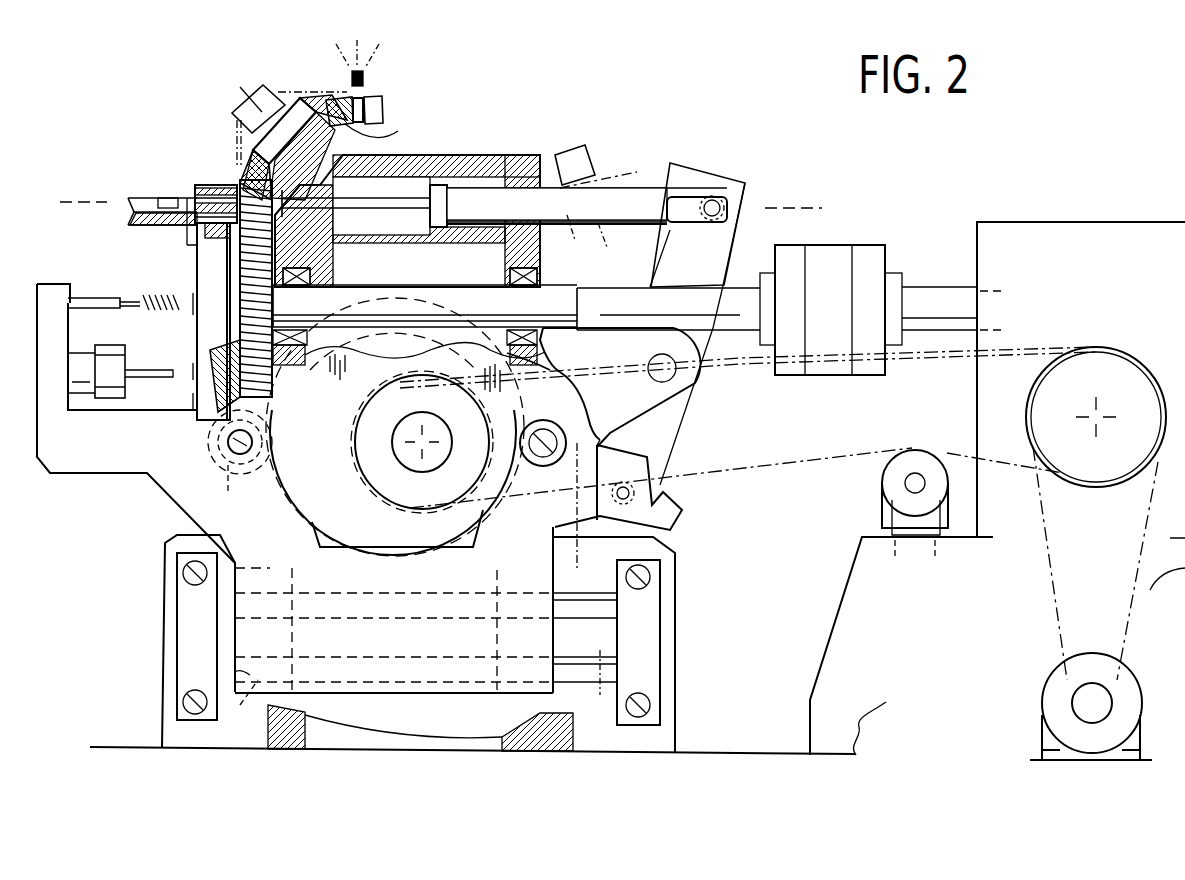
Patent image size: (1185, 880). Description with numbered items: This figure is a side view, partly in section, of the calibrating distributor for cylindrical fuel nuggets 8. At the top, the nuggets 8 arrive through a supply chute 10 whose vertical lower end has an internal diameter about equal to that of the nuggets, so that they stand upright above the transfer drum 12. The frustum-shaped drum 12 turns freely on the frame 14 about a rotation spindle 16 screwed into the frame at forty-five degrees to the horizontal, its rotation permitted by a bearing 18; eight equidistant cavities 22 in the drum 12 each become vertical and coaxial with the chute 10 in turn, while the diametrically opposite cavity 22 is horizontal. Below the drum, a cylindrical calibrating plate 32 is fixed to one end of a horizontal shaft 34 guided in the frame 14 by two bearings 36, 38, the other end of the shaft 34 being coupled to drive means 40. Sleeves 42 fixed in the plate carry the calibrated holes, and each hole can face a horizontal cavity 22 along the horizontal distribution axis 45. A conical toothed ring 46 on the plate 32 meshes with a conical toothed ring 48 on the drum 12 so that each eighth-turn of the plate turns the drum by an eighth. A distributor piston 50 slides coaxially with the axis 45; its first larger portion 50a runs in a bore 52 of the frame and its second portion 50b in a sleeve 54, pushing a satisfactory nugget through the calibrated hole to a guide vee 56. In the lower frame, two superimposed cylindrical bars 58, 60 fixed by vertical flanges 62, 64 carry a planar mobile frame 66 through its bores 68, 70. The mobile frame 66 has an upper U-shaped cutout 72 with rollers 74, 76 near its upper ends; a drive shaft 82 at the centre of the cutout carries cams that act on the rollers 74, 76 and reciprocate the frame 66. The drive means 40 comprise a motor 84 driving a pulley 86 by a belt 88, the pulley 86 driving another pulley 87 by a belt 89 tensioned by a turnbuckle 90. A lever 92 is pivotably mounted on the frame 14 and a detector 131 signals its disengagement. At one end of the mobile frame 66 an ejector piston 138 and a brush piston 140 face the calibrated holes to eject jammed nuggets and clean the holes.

The fuel nugget 8 is at (352, 78).
The supply chute 10 is at (372, 50).
The transfer drum 12 is at (360, 130).
The frame 14 is at (528, 155).
The rotation spindle 16 is at (247, 110).
The bearing 18 is at (245, 160).
The cavity 22 is at (365, 100).
The calibrating plate 32 is at (204, 272).
The horizontal shaft 34 is at (608, 303).
The bearing 36 is at (375, 290).
The bearing 38 is at (486, 292).
The drive means 40 is at (976, 212).
The sleeve 42 is at (195, 188).
The distribution axis 45 is at (790, 208).
The conical toothed ring 46 is at (230, 395).
The conical toothed ring 48 is at (395, 115).
The distributor piston 50 is at (648, 192).
The first larger diameter portion 50a is at (468, 203).
The second portion 50b is at (338, 210).
The bore 52 is at (530, 215).
The sleeve 54 is at (318, 205).
The guide vee 56 is at (128, 198).
The cylindrical bar 58 is at (600, 612).
The cylindrical bar 60 is at (580, 662).
The vertical flange 62 is at (187, 650).
The vertical flange 64 is at (645, 602).
The mobile frame 66 is at (143, 488).
The bore 68 is at (275, 608).
The bore 70 is at (240, 700).
The U-shaped cutout 72 is at (335, 548).
The roller 74 is at (229, 459).
The roller 76 is at (548, 420).
The drive shaft 82 is at (390, 425).
The motor 84 is at (1052, 690).
The pulley 86 is at (1110, 355).
The pulley 87 is at (385, 468).
The belt 88 is at (1058, 598).
The belt 89 is at (745, 470).
The turnbuckle 90 is at (868, 484).
The lever 92 is at (718, 165).
The detector 131 is at (590, 157).
The ejector piston 138 is at (156, 364).
The brush piston 140 is at (134, 286).